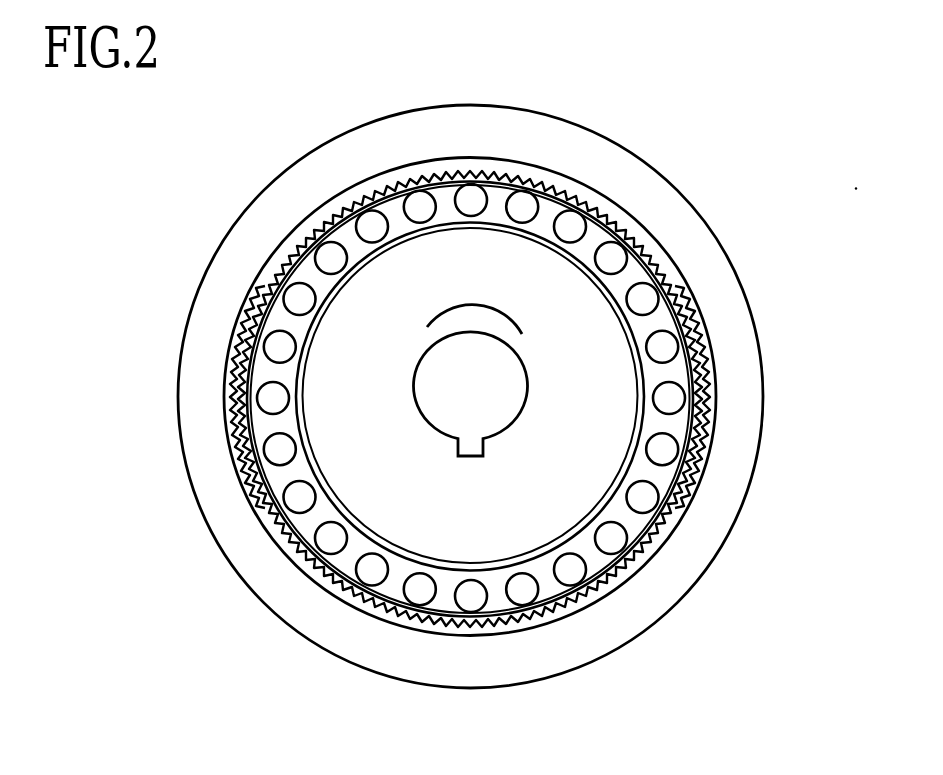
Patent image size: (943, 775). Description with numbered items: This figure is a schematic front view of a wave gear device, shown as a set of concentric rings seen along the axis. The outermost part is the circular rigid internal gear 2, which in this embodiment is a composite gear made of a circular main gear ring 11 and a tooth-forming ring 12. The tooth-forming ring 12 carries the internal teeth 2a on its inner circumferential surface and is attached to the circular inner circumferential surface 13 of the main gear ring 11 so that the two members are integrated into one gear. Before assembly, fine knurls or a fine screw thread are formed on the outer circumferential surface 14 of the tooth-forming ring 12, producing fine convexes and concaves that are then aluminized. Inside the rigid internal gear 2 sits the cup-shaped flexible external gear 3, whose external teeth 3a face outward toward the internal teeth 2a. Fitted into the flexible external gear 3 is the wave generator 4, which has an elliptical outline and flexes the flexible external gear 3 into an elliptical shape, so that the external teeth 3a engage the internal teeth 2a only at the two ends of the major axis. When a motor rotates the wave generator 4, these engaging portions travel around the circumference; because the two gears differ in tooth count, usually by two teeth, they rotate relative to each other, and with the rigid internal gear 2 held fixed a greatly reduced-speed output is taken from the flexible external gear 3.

The rigid internal gear 2 is at (702, 38).
The internal teeth 2a is at (707, 338).
The flexible external gear 3 is at (683, 430).
The external teeth 3a is at (705, 388).
The wave generator 4 is at (567, 490).
The main gear ring 11 is at (602, 158).
The tooth-forming ring 12 is at (643, 233).
The inner circumferential surface 13 is at (233, 385).
The outer circumferential surface 14 is at (242, 490).